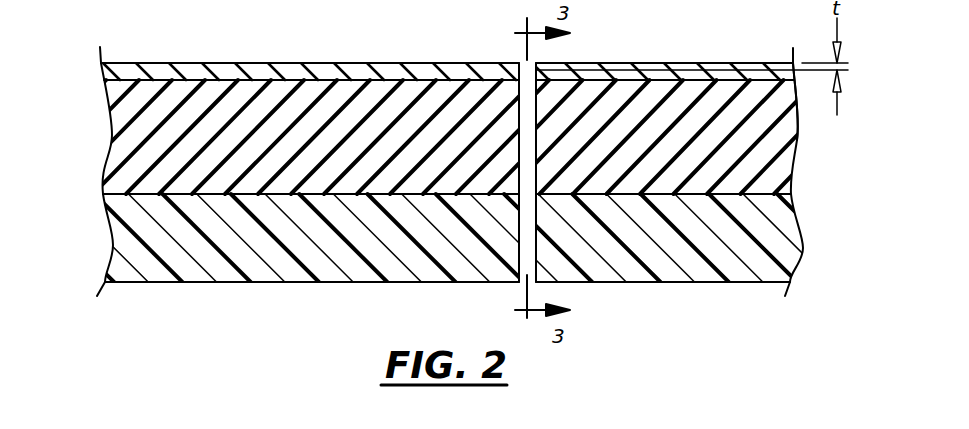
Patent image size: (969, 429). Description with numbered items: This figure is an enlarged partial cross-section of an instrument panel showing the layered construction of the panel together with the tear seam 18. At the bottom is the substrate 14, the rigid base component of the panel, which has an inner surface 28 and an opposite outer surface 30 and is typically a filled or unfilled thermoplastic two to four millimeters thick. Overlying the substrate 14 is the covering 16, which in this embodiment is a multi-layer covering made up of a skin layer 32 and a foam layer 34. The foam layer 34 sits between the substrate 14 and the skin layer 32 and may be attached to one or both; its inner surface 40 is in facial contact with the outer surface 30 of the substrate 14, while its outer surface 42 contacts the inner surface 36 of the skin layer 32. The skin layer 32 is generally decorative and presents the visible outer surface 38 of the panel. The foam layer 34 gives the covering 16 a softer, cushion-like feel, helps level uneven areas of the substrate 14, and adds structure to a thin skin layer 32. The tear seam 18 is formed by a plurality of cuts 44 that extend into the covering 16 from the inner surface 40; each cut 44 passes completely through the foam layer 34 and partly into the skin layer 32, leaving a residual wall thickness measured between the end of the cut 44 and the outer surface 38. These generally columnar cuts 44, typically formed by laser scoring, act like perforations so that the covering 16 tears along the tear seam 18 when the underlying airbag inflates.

The covering 16 is at (97, 128).
The substrate 14 is at (153, 268).
The inner surface of substrate 28 is at (747, 282).
The outer surface of substrate 30 is at (764, 193).
The skin layer 32 is at (143, 72).
The foam layer 34 is at (125, 126).
The inner surface of skin layer 36 is at (783, 87).
The outer surface of skin layer 38 is at (753, 62).
The inner surface of foam layer 40 is at (175, 193).
The outer surface of foam layer 42 is at (192, 80).
The cut 44 is at (537, 152).
The tear seam 18 is at (524, 80).